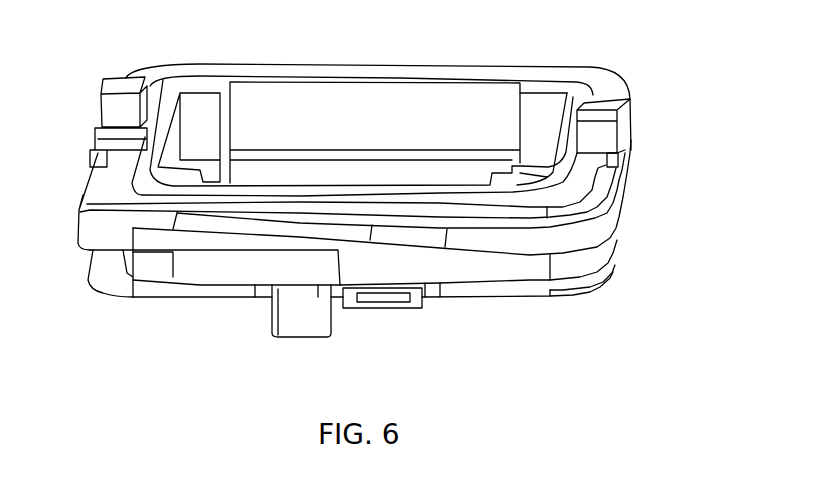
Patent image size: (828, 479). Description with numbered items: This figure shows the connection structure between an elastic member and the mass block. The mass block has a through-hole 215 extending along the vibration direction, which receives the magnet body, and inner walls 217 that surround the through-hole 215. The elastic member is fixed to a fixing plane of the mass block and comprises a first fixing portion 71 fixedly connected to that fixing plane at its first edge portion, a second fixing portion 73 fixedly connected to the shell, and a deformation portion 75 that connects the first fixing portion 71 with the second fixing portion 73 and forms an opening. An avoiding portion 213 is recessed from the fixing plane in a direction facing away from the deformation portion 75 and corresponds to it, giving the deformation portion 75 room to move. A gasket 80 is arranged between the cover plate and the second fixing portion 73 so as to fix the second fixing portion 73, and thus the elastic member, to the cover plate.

The through-hole 215 is at (385, 147).
The inner walls 217 is at (484, 100).
The gasket 80 is at (602, 110).
The second fixing portion 73 is at (614, 159).
The first fixing portion 71 is at (97, 151).
The avoiding portion 213 is at (415, 225).
The deformation portion 75 is at (460, 200).